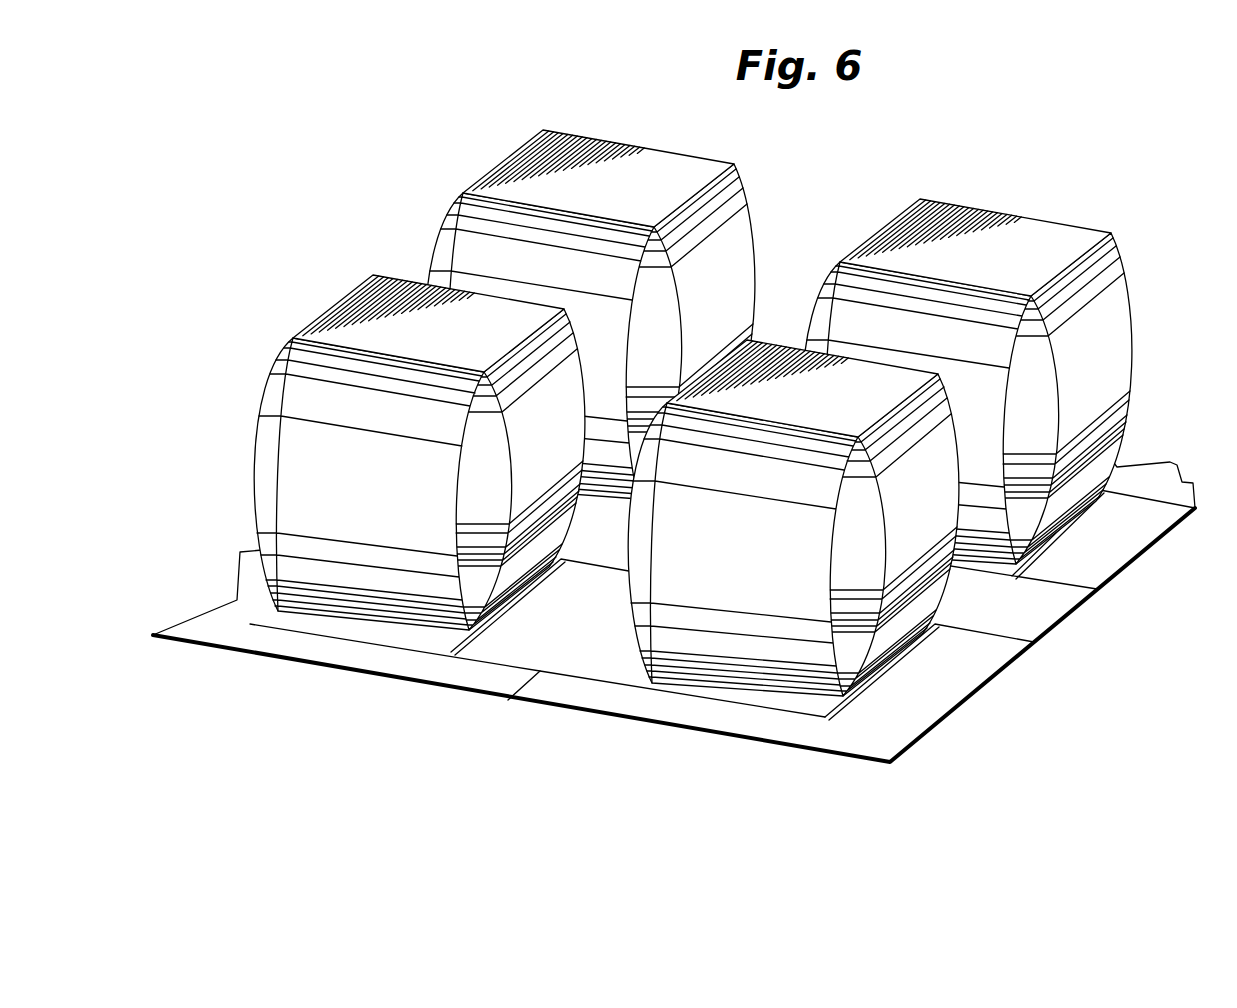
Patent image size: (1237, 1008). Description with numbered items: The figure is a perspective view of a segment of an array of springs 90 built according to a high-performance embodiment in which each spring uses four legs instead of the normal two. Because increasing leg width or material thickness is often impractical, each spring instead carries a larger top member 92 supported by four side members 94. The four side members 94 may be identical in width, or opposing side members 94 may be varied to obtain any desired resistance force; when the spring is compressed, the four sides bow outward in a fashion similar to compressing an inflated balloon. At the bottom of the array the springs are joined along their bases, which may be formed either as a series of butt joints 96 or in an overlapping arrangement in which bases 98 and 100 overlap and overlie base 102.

The capacitor array 90 is at (674, 446).
The top member 92 is at (702, 283).
The side members 94 is at (821, 305).
The butt joints 96 is at (533, 675).
The base 98 is at (395, 662).
The base 100 is at (682, 694).
The base 102 is at (823, 605).